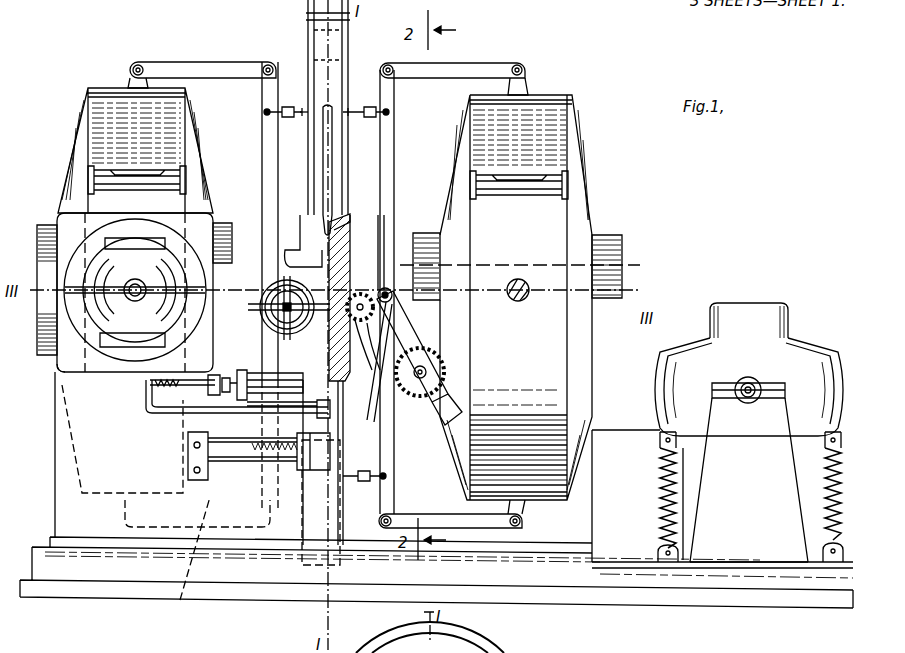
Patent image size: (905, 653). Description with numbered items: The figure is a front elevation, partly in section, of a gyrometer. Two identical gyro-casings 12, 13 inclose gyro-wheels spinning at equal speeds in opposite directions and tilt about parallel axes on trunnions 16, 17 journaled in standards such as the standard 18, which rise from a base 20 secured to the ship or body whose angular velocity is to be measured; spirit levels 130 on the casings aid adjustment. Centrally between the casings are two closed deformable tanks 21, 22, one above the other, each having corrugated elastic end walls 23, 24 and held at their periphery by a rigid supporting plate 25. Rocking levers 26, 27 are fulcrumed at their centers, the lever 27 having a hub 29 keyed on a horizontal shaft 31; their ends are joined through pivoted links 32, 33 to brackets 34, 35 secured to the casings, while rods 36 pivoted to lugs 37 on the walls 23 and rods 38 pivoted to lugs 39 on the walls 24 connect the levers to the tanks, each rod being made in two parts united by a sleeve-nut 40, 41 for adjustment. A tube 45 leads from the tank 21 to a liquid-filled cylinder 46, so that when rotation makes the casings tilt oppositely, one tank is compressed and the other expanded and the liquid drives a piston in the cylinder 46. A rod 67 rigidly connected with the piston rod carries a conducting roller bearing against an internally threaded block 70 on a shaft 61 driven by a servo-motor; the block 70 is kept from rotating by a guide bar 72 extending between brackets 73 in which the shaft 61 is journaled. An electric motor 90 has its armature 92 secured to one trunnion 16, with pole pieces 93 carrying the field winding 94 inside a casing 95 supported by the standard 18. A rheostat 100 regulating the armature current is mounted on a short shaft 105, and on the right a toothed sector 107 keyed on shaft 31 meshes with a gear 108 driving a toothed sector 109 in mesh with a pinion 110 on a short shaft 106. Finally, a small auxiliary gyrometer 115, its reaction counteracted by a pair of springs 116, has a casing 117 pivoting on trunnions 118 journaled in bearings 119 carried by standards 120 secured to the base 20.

The gyro-casing 12 is at (105, 100).
The gyro-casing 13 is at (548, 132).
The trunnions 16 is at (100, 252).
The trunnions 17 is at (515, 290).
The standard 18 is at (65, 460).
The base 20 is at (125, 588).
The deformable tank 21 is at (348, 42).
The deformable tank 22 is at (345, 525).
The elastic end walls 23 is at (308, 45).
The elastic end walls 24 is at (350, 68).
The supporting plate or frame 25 is at (342, 240).
The rocking lever 26 is at (262, 145).
The rocking lever 27 is at (395, 168).
The hub 29 is at (390, 275).
The shaft 31 is at (437, 266).
The pivoted links 32 is at (178, 66).
The pivoted links 33 is at (440, 64).
The brackets 34 is at (133, 80).
The brackets 35 is at (528, 82).
The rods 36 is at (303, 116).
The lugs 37 is at (308, 125).
The rods 38 is at (350, 125).
The lugs 39 is at (352, 116).
The sleeve-nut 40 is at (286, 107).
The sleeve-nut 41 is at (370, 107).
The tube 45 is at (322, 172).
The cylinder 46 is at (262, 395).
The shaft 61 is at (260, 440).
The rod 67 is at (165, 413).
The internally threaded block 70 is at (315, 470).
The guide bar 72 is at (240, 462).
The brackets 73 is at (188, 455).
The electric motor 90 is at (75, 254).
The armature 92 is at (100, 296).
The pole pieces 93 is at (97, 318).
The field winding 94 is at (125, 348).
The casing 95 is at (73, 360).
The rheostat 100 is at (262, 300).
The short shaft 105 is at (268, 322).
The short shaft 106 is at (376, 372).
The toothed sector 107 is at (430, 340).
The gear 108 is at (440, 375).
The toothed sector 109 is at (445, 295).
The pinion 110 is at (368, 282).
The auxiliary gyrometer 115 is at (752, 308).
The springs 116 is at (663, 492).
The casing 117 is at (838, 355).
The trunnions 118 is at (758, 380).
The bearings 119 is at (722, 383).
The standards 120 is at (778, 545).
The spirit levels 130 is at (100, 172).